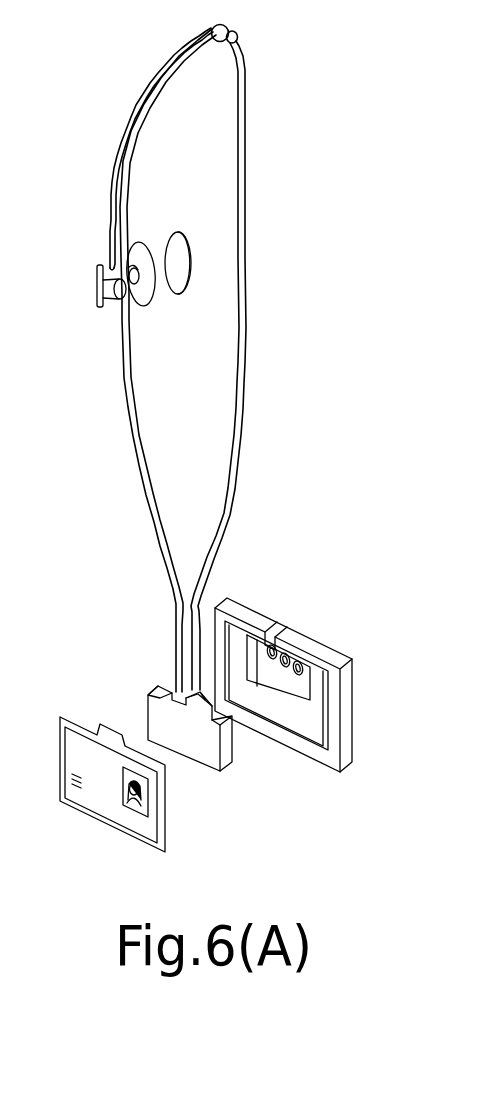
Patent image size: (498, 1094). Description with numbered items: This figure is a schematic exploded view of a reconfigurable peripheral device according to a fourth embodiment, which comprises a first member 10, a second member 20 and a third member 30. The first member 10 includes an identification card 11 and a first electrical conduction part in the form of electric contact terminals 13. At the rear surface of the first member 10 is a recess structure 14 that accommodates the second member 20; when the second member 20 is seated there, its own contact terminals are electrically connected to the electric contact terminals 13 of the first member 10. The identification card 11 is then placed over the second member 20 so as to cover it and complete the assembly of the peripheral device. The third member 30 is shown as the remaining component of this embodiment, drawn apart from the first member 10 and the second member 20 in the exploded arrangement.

The first member 10 is at (319, 691).
The identification card 11 is at (100, 802).
The electric contact terminals 13 is at (275, 648).
The recess structure 14 is at (290, 680).
The second member 20 is at (158, 717).
The third member 30 is at (83, 250).